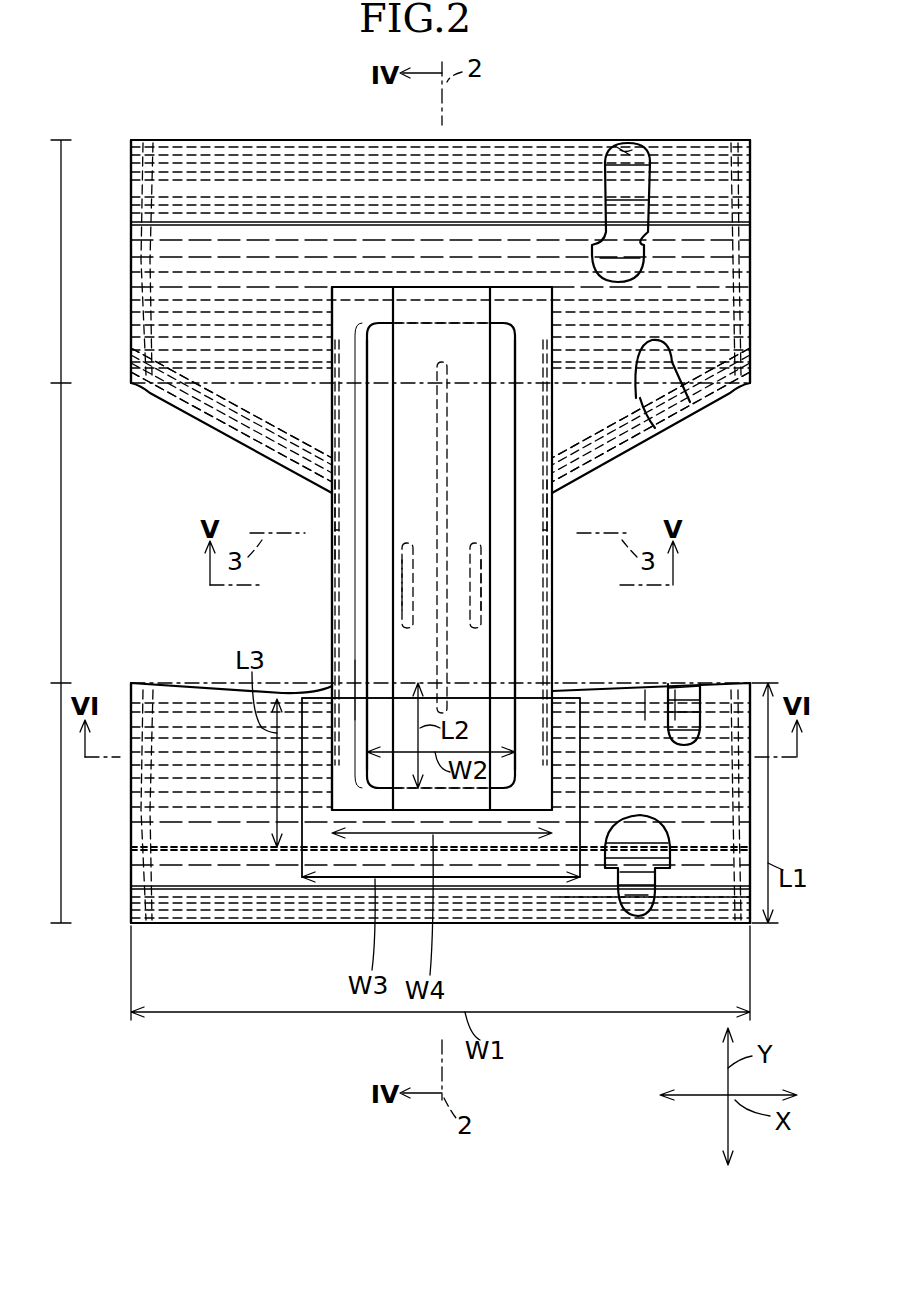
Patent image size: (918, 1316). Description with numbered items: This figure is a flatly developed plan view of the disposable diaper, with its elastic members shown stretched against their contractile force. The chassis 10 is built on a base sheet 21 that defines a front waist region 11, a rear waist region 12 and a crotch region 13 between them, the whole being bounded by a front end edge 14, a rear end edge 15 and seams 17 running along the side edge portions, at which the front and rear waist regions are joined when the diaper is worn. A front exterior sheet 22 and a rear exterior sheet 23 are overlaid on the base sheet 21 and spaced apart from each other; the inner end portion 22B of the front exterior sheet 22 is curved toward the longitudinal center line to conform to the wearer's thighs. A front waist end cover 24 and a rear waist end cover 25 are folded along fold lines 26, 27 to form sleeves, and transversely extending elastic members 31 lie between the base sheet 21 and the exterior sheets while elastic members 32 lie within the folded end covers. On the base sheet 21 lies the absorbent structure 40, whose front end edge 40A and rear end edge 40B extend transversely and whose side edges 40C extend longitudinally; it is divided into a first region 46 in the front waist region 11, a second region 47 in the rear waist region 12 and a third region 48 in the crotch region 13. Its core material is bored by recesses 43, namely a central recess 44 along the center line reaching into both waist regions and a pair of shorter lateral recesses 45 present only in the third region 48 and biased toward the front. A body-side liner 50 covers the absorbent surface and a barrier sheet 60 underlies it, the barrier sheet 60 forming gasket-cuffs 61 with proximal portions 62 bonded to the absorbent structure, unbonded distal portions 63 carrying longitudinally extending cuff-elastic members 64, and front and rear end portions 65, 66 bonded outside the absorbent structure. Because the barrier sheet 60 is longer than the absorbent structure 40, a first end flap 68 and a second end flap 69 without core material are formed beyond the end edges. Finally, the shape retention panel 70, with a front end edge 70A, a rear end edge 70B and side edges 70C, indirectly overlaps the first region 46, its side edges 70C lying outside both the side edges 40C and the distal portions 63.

The chassis 10 is at (670, 450).
The front waist region 11 is at (61, 805).
The rear waist region 12 is at (61, 258).
The crotch region 13 is at (61, 525).
The front end edge 14 is at (468, 925).
The rear end edge 15 is at (332, 140).
The seams 17 is at (131, 250).
The base sheet 21 is at (240, 405).
The front exterior sheet 22 is at (695, 690).
The inner end portion of front waist sheet 22B is at (684, 690).
The rear exterior sheet 23 is at (663, 403).
The front waist end cover 24 is at (590, 905).
The rear waist end cover 25 is at (598, 150).
The fold line 26 is at (680, 924).
The fold line 27 is at (572, 140).
The elastic members 31 is at (640, 395).
The elastic members 32 is at (622, 155).
The absorbent structure 40 is at (414, 317).
The front end edge of absorbent structure 40A is at (462, 800).
The rear end edge of absorbent structure 40B is at (463, 323).
The side edges of absorbent structure 40C is at (377, 437).
The recesses 43 is at (268, 640).
The central recess 44 is at (440, 527).
The lateral recesses 45 is at (475, 592).
The first region 46 is at (355, 712).
The second region 47 is at (355, 358).
The third region 48 is at (355, 385).
The body-side liner 50 is at (452, 290).
The barrier sheet 60 is at (572, 633).
The gasket-cuffs 61 is at (258, 472).
The proximal portions 62 is at (332, 488).
The distal portions 63 is at (345, 518).
The cuff-elastic members 64 is at (335, 535).
The front end portion of gasket-cuffs 65 is at (410, 852).
The rear end portion of gasket-cuffs 66 is at (360, 287).
The first end flap 68 is at (444, 812).
The second end flap 69 is at (422, 300).
The shape retention panel 70 is at (352, 836).
The front end edge of shape retention panel 70A is at (520, 878).
The rear end edge of shape retention panel 70B is at (303, 692).
The side edges of shape retention panel 70C is at (302, 815).